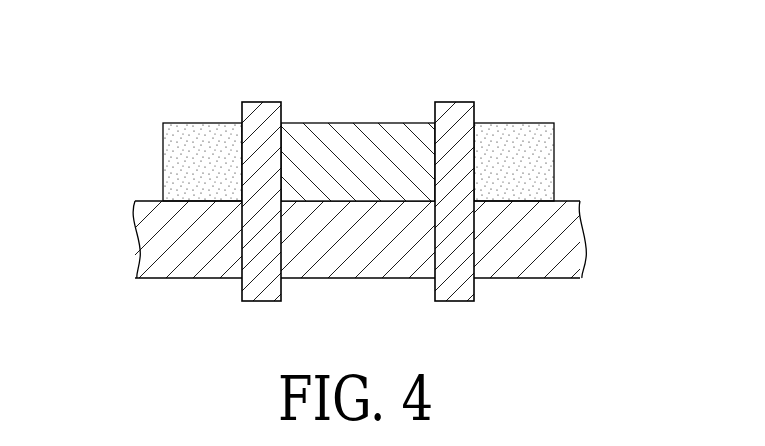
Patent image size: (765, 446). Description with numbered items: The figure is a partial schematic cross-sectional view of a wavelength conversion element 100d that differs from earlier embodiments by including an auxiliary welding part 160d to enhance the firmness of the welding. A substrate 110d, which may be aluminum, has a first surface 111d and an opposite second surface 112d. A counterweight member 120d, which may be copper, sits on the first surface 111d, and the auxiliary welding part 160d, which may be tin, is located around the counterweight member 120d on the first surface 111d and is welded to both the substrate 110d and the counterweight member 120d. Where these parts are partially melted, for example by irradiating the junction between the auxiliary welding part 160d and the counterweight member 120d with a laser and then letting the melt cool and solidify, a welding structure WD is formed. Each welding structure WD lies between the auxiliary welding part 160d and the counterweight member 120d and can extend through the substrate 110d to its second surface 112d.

The wavelength conversion element 100d is at (95, 48).
The substrate 110d is at (354, 240).
The first surface 111d is at (569, 201).
The second surface 112d is at (532, 279).
The counterweight member 120d is at (357, 140).
The auxiliary welding part 160d is at (207, 138).
The welding structure WD is at (263, 115).